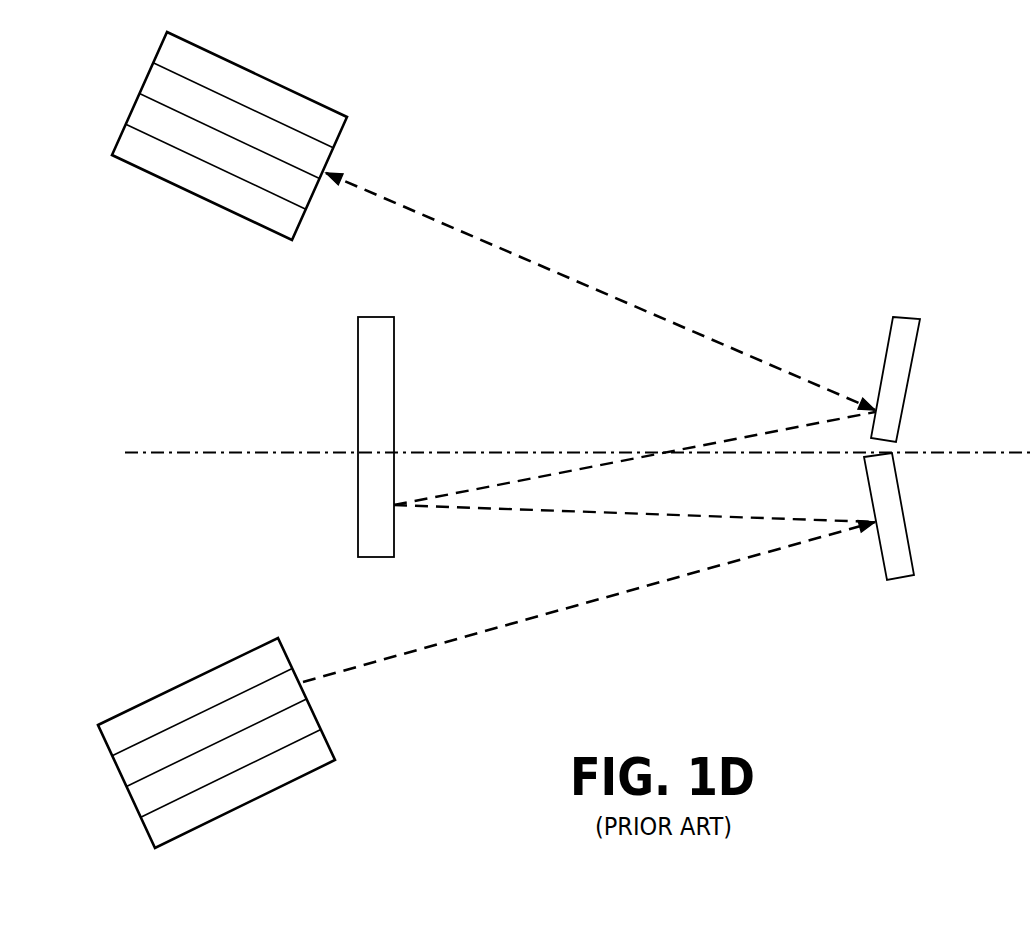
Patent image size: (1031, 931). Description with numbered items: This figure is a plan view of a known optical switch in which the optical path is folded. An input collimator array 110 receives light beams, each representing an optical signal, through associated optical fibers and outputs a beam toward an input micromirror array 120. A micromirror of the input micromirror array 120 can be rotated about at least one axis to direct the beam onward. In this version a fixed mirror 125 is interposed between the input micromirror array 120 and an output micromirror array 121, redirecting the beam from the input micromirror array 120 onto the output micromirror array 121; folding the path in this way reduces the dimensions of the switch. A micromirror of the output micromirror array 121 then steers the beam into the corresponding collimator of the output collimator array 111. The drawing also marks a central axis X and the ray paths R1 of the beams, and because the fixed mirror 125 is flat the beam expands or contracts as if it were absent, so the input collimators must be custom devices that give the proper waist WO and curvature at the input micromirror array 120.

The input collimator array 110 is at (293, 798).
The output collimator array 111 is at (160, 186).
The input micromirror array 120 is at (897, 555).
The output micromirror array 121 is at (900, 340).
The fixed mirror 125 is at (358, 393).
The ray R1 is at (427, 213).
The optical axis X is at (298, 456).
The waist WO is at (870, 528).